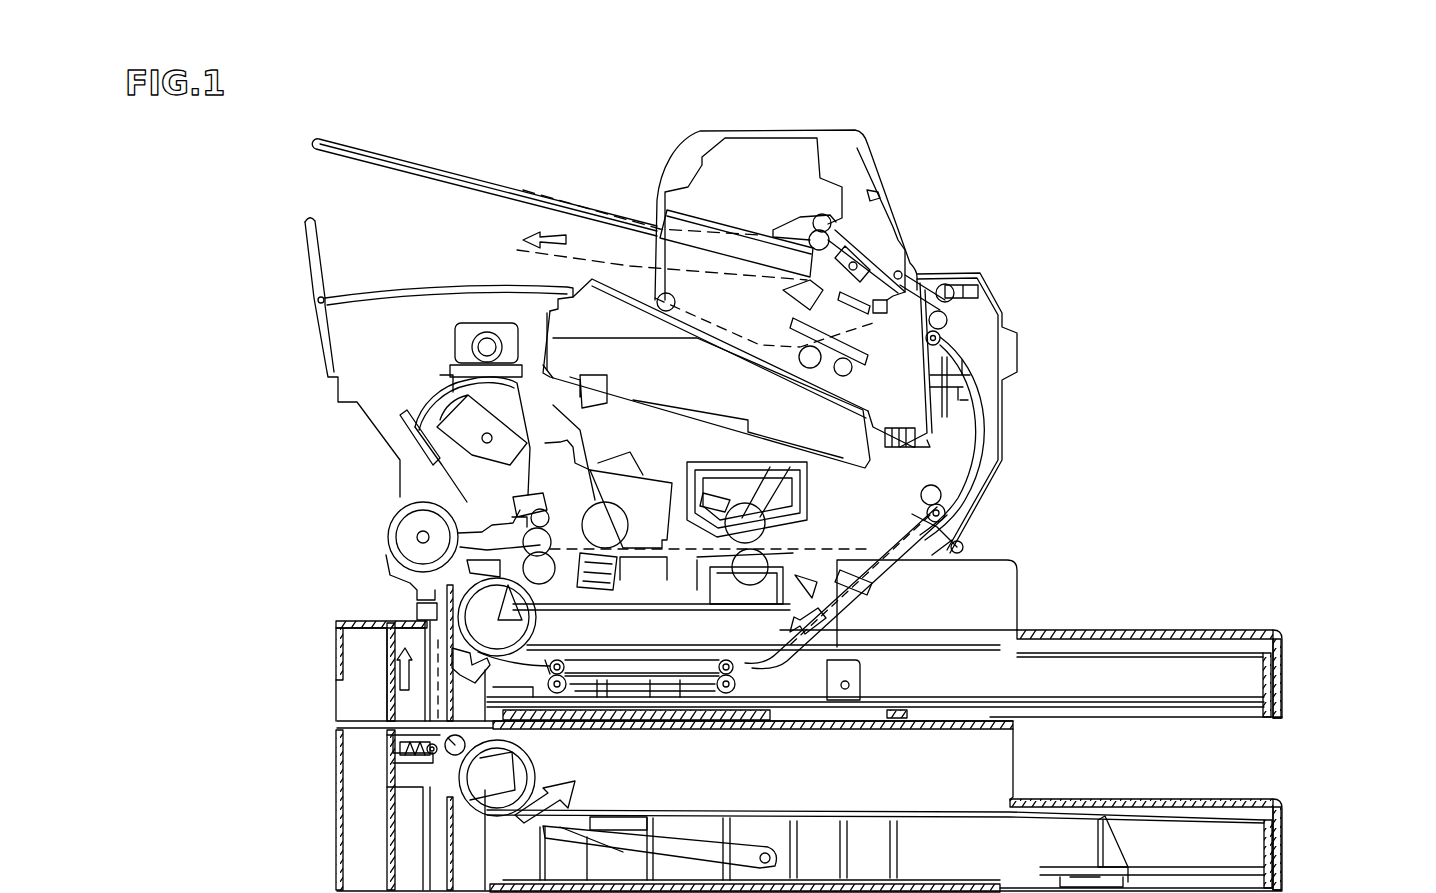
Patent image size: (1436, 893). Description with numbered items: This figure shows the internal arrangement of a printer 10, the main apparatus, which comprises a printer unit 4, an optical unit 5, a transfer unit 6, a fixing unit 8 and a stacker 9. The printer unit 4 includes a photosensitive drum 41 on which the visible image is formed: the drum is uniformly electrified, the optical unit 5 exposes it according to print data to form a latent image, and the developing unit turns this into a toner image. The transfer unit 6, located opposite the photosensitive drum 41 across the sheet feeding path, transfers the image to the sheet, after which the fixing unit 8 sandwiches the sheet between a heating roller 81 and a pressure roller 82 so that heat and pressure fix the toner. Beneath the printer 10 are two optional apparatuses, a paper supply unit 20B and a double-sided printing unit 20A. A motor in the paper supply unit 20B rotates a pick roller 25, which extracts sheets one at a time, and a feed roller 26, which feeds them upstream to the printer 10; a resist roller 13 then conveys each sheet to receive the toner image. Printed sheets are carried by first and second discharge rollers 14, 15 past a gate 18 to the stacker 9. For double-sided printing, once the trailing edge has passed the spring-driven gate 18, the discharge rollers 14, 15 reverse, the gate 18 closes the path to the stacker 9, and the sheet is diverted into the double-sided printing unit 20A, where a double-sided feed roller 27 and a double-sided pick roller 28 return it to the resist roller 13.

The printer unit 4 is at (548, 458).
The optical unit 5 is at (627, 392).
The transfer unit 6 is at (604, 590).
The fixing unit 8 is at (790, 480).
The stacker 9 is at (583, 162).
The printer 10 is at (985, 328).
The resist roller 13 is at (445, 568).
The first discharge roller 14 is at (963, 504).
The second discharge roller 15 is at (950, 272).
The gate 18 is at (957, 547).
The double-sided printing unit 20A is at (1020, 632).
The paper supply unit 20B is at (990, 782).
The pick roller 25 is at (440, 820).
The feed roller 26 is at (430, 747).
The double-sided feed roller 27 is at (745, 690).
The double-sided pick roller 28 is at (440, 635).
The photosensitive drum 41 is at (612, 520).
The heating roller 81 is at (760, 523).
The pressure roller 82 is at (748, 575).